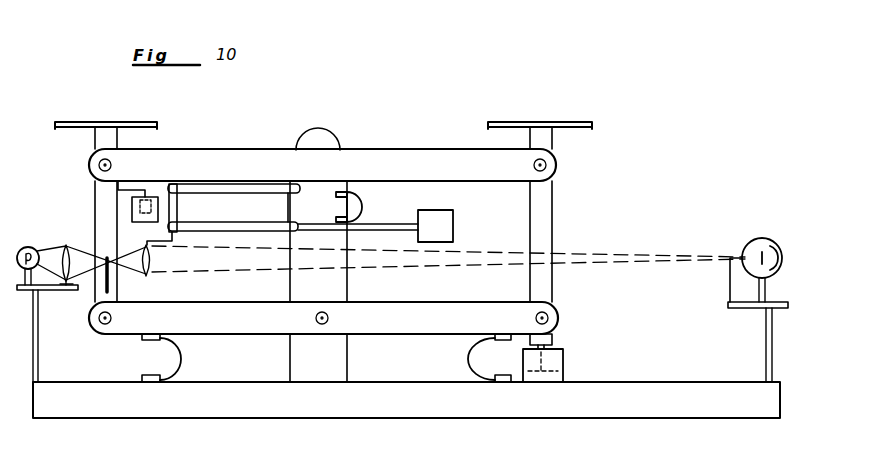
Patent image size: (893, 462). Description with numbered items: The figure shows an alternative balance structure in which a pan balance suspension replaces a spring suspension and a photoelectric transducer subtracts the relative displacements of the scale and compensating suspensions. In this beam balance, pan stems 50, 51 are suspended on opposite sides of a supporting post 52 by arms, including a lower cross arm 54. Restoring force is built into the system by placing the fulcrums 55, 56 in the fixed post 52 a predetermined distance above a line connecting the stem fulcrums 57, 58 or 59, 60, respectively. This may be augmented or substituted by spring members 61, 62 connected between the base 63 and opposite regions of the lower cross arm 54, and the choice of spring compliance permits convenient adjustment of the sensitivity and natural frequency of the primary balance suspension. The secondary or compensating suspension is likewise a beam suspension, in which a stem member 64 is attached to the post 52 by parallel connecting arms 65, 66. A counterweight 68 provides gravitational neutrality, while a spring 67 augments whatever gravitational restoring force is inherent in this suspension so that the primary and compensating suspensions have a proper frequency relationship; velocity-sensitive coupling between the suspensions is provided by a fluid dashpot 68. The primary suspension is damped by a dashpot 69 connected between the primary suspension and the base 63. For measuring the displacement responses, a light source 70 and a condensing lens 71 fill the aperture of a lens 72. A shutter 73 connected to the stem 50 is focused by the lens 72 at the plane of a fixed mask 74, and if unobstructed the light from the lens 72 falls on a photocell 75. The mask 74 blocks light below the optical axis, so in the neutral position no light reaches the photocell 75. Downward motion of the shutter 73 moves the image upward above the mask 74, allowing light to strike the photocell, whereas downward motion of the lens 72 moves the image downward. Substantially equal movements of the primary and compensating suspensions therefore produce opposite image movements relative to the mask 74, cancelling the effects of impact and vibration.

The pan stem 50 is at (160, 128).
The pan stem 51 is at (553, 145).
The supporting post 52 is at (330, 133).
The lower cross arm 54 is at (425, 302).
The fulcrum 55 is at (297, 149).
The fulcrum 56 is at (327, 314).
The stem fulcrum 57 is at (556, 170).
The stem fulcrum 58 is at (99, 169).
The stem fulcrum 59 is at (557, 312).
The stem fulcrum 60 is at (100, 326).
The spring member 61 is at (470, 358).
The spring member 62 is at (181, 366).
The base 63 is at (153, 418).
The stem member 64 is at (178, 209).
The connecting arm 65 is at (247, 185).
The connecting arm 66 is at (222, 211).
The spring 67 is at (364, 200).
The counterweight / fluid dashpot 68 is at (454, 218).
The dashpot 69 is at (566, 353).
The light source 70 is at (27, 247).
The condensing lens 71 is at (66, 246).
The lens 72 is at (150, 268).
The shutter 73 is at (109, 280).
The fixed mask 74 is at (728, 288).
The photocell 75 is at (760, 238).